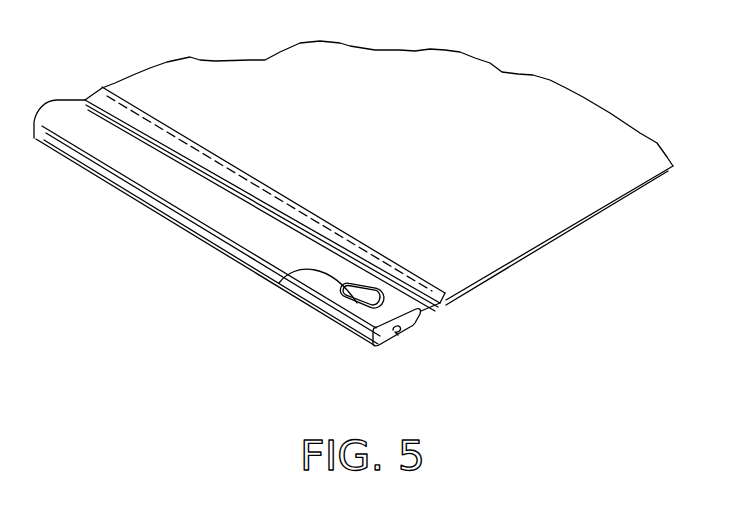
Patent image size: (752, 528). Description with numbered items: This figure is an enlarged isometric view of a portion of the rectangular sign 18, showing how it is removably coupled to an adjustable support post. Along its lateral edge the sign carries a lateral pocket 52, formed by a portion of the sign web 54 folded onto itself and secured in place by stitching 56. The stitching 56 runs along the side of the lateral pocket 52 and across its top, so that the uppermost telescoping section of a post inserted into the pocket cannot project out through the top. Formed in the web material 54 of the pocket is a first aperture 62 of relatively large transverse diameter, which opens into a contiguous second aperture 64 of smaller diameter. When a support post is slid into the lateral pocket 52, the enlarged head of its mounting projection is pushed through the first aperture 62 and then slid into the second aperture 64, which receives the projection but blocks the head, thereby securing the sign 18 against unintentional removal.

The rectangular sign 18 is at (475, 60).
The sign web 54 is at (493, 247).
The stitching 56 is at (276, 201).
The first aperture 62 is at (346, 303).
The second aperture 64 is at (278, 280).
The lateral pocket 52 is at (398, 330).